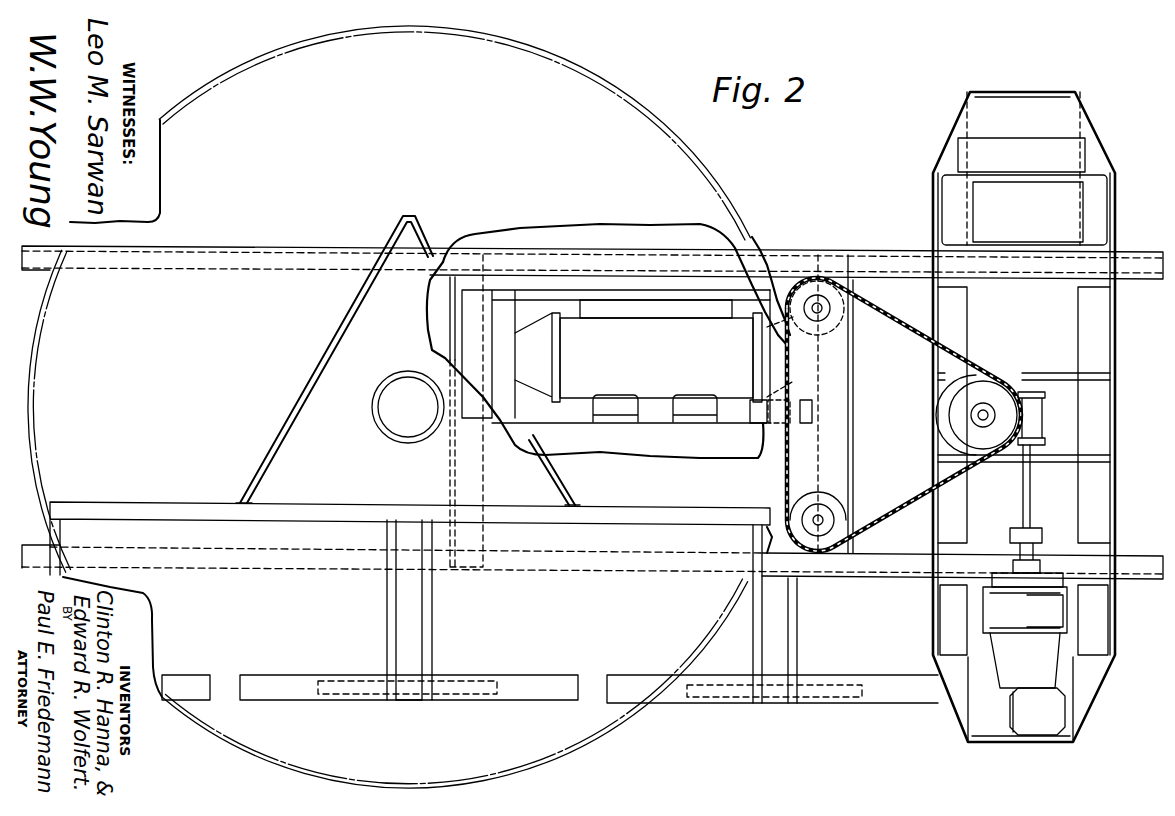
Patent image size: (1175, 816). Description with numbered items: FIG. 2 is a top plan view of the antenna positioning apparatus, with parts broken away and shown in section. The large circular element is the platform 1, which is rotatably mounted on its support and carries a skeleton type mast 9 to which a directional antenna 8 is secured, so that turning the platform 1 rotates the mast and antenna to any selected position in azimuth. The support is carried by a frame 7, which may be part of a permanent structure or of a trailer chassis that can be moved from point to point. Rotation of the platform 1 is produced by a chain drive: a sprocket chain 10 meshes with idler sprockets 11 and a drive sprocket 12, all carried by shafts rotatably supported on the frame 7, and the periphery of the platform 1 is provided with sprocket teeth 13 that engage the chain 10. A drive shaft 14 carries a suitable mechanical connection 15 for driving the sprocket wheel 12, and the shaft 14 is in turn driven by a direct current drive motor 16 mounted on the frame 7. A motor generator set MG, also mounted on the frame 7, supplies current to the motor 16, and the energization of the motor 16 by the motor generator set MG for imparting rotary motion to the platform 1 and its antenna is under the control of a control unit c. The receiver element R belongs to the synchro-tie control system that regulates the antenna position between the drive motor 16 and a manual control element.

The platform 1 is at (724, 192).
The frame 7 is at (897, 252).
The directional antenna 8 is at (512, 676).
The skeleton type mast 9 is at (398, 236).
The sprocket chain 10 is at (906, 325).
The idler sprockets 11 is at (835, 322).
The drive sprocket 12 is at (952, 415).
The sprocket teeth 13 is at (768, 256).
The drive shaft 14 is at (1023, 490).
The mechanical connection 15 is at (1046, 420).
The direct current drive motor 16 is at (1008, 665).
The control unit c is at (1046, 181).
The receiver element R is at (1062, 710).
The motor generator set MG is at (665, 420).